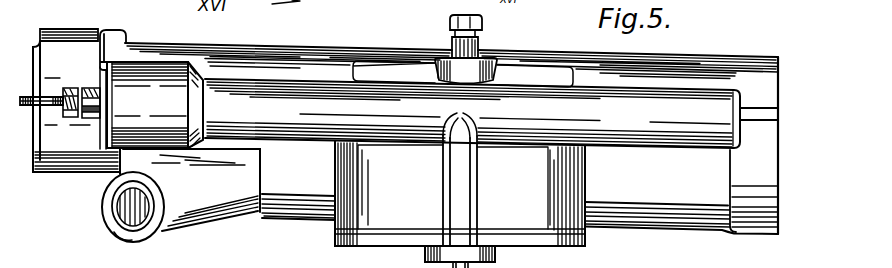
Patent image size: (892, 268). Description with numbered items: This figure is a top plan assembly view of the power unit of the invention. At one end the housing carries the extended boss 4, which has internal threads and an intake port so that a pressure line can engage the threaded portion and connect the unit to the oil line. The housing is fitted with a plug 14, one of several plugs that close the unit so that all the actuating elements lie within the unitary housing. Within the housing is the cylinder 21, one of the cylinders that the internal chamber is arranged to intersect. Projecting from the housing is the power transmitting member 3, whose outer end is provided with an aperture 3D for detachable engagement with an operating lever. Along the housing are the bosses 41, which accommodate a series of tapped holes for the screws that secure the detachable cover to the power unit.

The plug 14 is at (104, 32).
The aperture 3D is at (24, 108).
The power transmitting member 3 is at (90, 120).
The extended boss 4 is at (116, 236).
The cylinder 21 is at (256, 216).
The bosses 41 is at (462, 197).